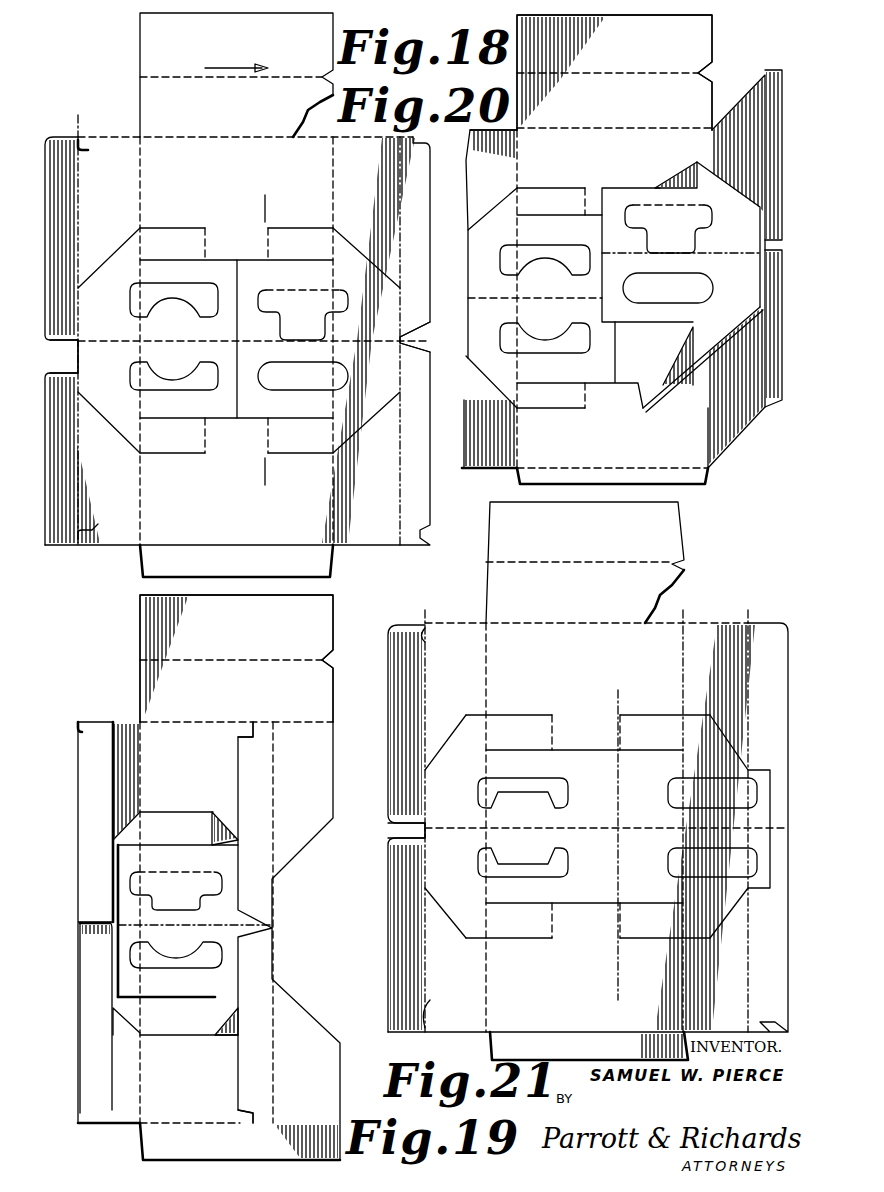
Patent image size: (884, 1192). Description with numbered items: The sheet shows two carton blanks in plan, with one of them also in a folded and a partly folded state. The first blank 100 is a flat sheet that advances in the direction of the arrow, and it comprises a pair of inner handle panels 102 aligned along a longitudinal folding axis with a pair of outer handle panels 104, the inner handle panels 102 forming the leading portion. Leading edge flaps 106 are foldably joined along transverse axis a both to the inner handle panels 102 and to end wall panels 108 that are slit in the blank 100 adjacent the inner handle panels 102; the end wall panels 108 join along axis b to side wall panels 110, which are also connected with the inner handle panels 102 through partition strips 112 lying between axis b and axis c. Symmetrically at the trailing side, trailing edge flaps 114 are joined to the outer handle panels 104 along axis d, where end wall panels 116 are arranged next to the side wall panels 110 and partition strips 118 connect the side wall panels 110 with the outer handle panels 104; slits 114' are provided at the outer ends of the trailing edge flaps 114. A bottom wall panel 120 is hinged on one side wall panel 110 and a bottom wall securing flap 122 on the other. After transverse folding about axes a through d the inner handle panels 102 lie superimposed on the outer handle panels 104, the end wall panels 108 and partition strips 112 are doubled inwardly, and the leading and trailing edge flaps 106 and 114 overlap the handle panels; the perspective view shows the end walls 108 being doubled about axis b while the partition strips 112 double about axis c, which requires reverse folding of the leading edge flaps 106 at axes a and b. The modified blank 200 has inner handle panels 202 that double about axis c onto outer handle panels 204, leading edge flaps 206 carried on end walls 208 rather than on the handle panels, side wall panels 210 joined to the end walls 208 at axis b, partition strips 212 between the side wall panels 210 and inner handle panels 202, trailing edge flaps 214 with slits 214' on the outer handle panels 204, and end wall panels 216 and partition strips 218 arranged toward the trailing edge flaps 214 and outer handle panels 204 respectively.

In FIG. 18, the carton blank 100 is at (140, 108).
In FIG. 20, the carton blank 100 is at (718, 36).
In FIG. 19, the carton blank 100 is at (138, 670).
In FIG. 18, the inner handle panel 102 is at (303, 338).
In FIG. 20, the inner handle panel 102 is at (681, 242).
In FIG. 19, the inner handle panel 102 is at (195, 921).
In FIG. 18, the outer handle panel 104 is at (173, 338).
In FIG. 20, the outer handle panel 104 is at (534, 298).
In FIG. 19, the outer handle panel 104 is at (80, 940).
In FIG. 18, the leading edge flap 106 is at (400, 325).
In FIG. 20, the leading edge flap 106 is at (782, 78).
In FIG. 19, the leading edge flap 106 is at (268, 826).
In FIG. 18, the end wall panel 108 is at (368, 340).
In FIG. 20, the end wall panel 108 is at (748, 100).
In FIG. 19, the end wall panel 108 is at (306, 941).
In FIG. 18, the side wall panel 110 is at (242, 336).
In FIG. 20, the side wall panel 110 is at (612, 299).
In FIG. 19, the side wall panel 110 is at (206, 922).
In FIG. 18, the partition strip 112 is at (300, 340).
In FIG. 20, the partition strip 112 is at (675, 182).
In FIG. 19, the partition strip 112 is at (228, 816).
In FIG. 18, the trailing edge flap 114 is at (86, 346).
In FIG. 19, the trailing edge flap 114 is at (89, 922).
In FIG. 18, the slit 114' is at (108, 340).
In FIG. 19, the slit 114' is at (60, 925).
In FIG. 18, the end wall panel 116 is at (93, 341).
In FIG. 20, the end wall panel 116 is at (489, 299).
In FIG. 19, the end wall panel 116 is at (122, 726).
In FIG. 18, the partition strip 118 is at (236, 340).
In FIG. 20, the partition strip 118 is at (559, 298).
In FIG. 19, the partition strip 118 is at (178, 923).
In FIG. 18, the bottom wall panel 120 is at (236, 75).
In FIG. 20, the bottom wall panel 120 is at (614, 72).
In FIG. 19, the bottom wall panel 120 is at (236, 658).
In FIG. 18, the bottom wall securing flap 122 is at (236, 561).
In FIG. 20, the bottom wall securing flap 122 is at (710, 484).
In FIG. 19, the bottom wall securing flap 122 is at (240, 1141).
In FIG. 21, the carton blank 200 is at (690, 578).
In FIG. 21, the inner handle panel 202 is at (696, 827).
In FIG. 21, the outer handle panel 204 is at (535, 827).
In FIG. 21, the leading edge flap 206 is at (758, 702).
In FIG. 21, the end wall 208 is at (705, 827).
In FIG. 21, the side wall panel 210 is at (585, 755).
In FIG. 21, the partition strip 212 is at (665, 826).
In FIG. 21, the trailing edge flap 214 is at (430, 822).
In FIG. 21, the slit 214' is at (450, 828).
In FIG. 21, the end wall panel 216 is at (435, 831).
In FIG. 21, the partition strip 218 is at (574, 826).